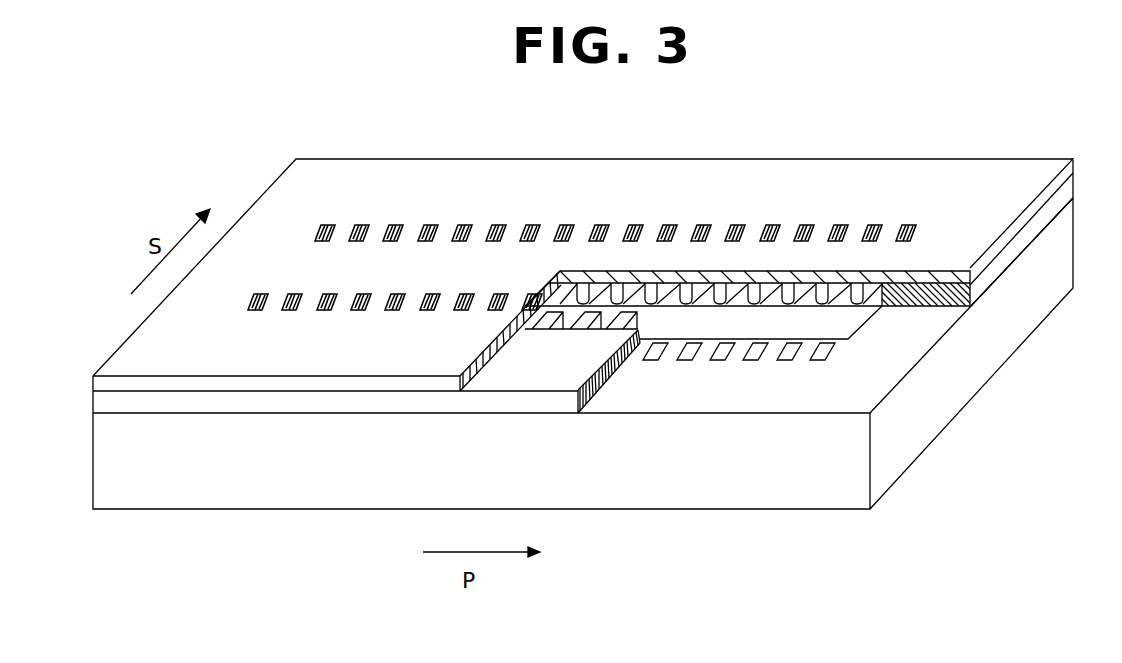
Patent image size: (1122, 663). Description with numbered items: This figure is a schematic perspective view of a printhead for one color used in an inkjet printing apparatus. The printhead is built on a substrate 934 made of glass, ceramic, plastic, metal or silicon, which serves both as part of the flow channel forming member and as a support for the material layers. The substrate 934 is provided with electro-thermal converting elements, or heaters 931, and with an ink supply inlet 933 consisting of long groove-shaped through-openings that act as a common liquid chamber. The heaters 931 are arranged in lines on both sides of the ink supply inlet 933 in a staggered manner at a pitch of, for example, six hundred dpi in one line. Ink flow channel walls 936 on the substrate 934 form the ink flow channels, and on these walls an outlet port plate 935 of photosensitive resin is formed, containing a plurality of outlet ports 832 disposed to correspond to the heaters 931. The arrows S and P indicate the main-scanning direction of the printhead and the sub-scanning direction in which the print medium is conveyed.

The substrate 934 is at (658, 477).
The outlet port plate 935 is at (865, 184).
The ink flow channel walls 936 is at (650, 292).
The ink supply inlet 933 is at (845, 319).
The electro-thermal converting elements (heaters) 931 is at (832, 350).
The outlet ports 832 is at (763, 232).